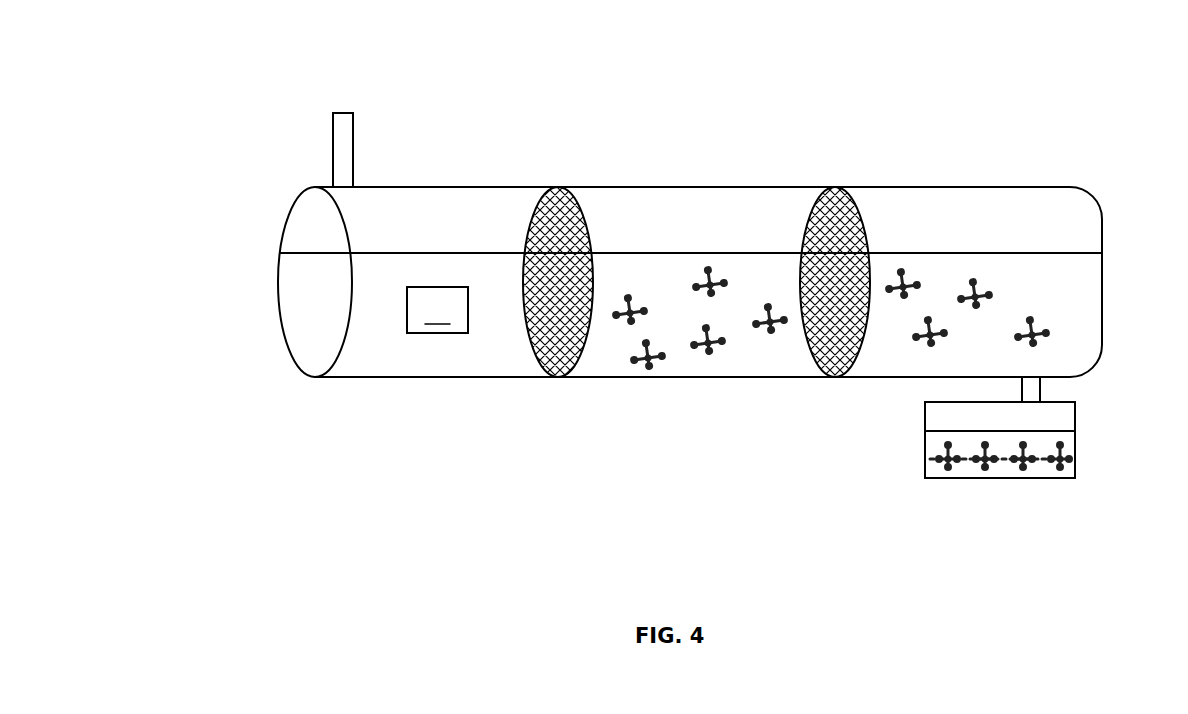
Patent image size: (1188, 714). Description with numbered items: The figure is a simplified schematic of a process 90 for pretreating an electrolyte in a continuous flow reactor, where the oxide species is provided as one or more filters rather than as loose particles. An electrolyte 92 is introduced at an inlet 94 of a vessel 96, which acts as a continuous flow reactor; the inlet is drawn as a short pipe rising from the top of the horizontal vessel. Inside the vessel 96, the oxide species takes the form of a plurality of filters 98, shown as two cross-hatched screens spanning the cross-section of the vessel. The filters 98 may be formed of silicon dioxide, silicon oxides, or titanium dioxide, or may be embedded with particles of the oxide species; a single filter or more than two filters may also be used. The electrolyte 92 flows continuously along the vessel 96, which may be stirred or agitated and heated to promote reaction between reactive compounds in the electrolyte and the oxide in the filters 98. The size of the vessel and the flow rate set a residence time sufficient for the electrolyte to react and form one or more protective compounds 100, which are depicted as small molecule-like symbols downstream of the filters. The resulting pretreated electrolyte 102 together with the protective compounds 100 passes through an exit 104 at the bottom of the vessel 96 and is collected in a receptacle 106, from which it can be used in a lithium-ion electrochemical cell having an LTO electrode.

The process 90 is at (224, 58).
The electrolyte 92 is at (437, 310).
The inlet 94 is at (334, 112).
The vessel 96 is at (302, 200).
The filters 98 is at (560, 187).
The protective compounds 100 is at (630, 297).
The pretreated electrolyte 102 is at (1045, 442).
The exit 104 is at (1041, 384).
The receptacle 106 is at (1002, 479).